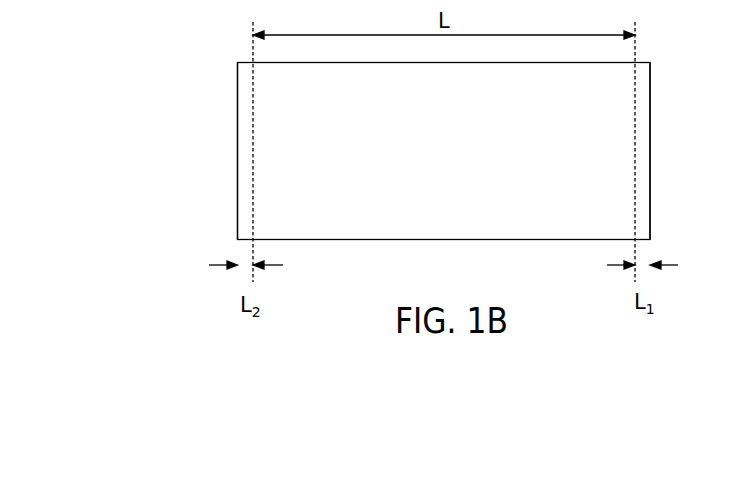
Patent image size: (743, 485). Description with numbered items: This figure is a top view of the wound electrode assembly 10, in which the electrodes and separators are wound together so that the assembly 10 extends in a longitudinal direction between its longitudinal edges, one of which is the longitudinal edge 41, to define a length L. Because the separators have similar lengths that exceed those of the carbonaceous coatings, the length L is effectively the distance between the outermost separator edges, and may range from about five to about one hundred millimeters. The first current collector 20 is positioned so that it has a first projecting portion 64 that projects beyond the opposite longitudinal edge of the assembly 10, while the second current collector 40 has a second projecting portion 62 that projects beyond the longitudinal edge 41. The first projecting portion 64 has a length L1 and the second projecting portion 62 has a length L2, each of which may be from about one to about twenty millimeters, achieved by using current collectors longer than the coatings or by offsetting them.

The assembly 10 is at (455, 162).
The first current collector 20 is at (641, 115).
The second current collector 40 is at (240, 106).
The longitudinal edge 41 is at (254, 166).
The second projecting portion 62 is at (229, 182).
The first projecting portion 64 is at (659, 183).